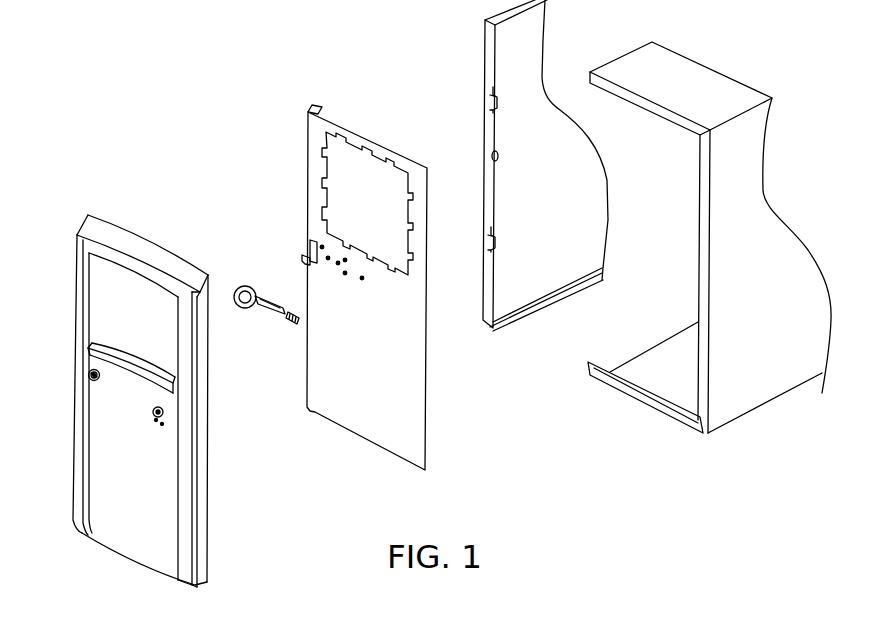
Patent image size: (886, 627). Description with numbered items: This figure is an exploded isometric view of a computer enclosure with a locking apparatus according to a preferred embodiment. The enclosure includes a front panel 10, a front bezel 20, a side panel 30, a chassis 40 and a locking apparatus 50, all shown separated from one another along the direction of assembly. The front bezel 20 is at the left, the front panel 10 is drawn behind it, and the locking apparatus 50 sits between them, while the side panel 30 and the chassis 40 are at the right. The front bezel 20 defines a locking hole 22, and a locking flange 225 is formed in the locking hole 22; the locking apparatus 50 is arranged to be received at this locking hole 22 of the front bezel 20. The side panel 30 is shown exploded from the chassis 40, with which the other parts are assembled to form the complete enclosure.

The front panel 10 is at (370, 427).
The front bezel 20 is at (120, 538).
The locking hole 22 is at (92, 373).
The locking flange 225 is at (94, 379).
The side panel 30 is at (553, 277).
The chassis 40 is at (750, 400).
The locking apparatus 50 is at (257, 318).